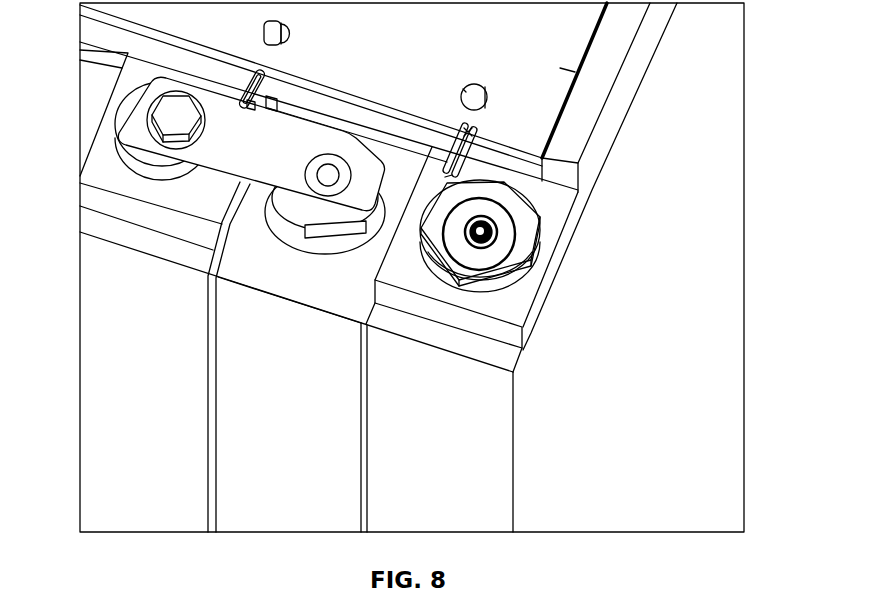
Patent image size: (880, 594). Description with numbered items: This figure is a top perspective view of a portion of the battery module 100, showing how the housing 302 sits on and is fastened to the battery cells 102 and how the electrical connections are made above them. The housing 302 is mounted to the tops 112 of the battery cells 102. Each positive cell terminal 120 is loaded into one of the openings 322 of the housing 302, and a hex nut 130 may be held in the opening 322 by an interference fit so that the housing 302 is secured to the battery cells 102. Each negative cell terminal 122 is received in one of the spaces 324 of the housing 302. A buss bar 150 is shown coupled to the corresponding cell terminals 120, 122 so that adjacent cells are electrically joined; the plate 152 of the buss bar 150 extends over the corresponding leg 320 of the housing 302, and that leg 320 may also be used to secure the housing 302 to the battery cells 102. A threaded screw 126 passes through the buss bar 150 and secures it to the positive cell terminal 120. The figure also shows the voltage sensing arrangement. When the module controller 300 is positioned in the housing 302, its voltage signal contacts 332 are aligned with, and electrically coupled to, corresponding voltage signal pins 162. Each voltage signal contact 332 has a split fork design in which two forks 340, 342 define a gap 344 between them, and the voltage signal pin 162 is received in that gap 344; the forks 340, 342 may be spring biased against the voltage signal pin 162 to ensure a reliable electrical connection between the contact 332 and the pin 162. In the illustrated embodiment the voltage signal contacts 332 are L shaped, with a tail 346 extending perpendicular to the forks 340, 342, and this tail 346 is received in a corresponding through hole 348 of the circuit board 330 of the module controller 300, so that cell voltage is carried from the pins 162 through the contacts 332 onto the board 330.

The battery module 100 is at (140, 565).
The battery cells 102 is at (290, 520).
The tops of the battery cells 112 is at (507, 357).
The positive cell terminals 120 is at (522, 228).
The negative cell terminals 122 is at (306, 240).
The threaded screw 126 is at (182, 108).
The hex nuts 130 is at (516, 210).
The buss bar 150 is at (300, 140).
The plate 152 is at (352, 133).
The voltage signal pin 162 is at (268, 97).
The module controller 300 is at (608, 48).
The housing 302 is at (575, 108).
The leg 320 is at (175, 200).
The openings 322 is at (497, 277).
The spaces 324 is at (352, 294).
The circuit board 330 is at (560, 68).
The voltage signal contacts 332 is at (477, 84).
The fork 340 is at (451, 130).
The fork 342 is at (466, 169).
The gap 344 is at (469, 131).
The tail 346 is at (463, 91).
The through hole 348 is at (462, 88).